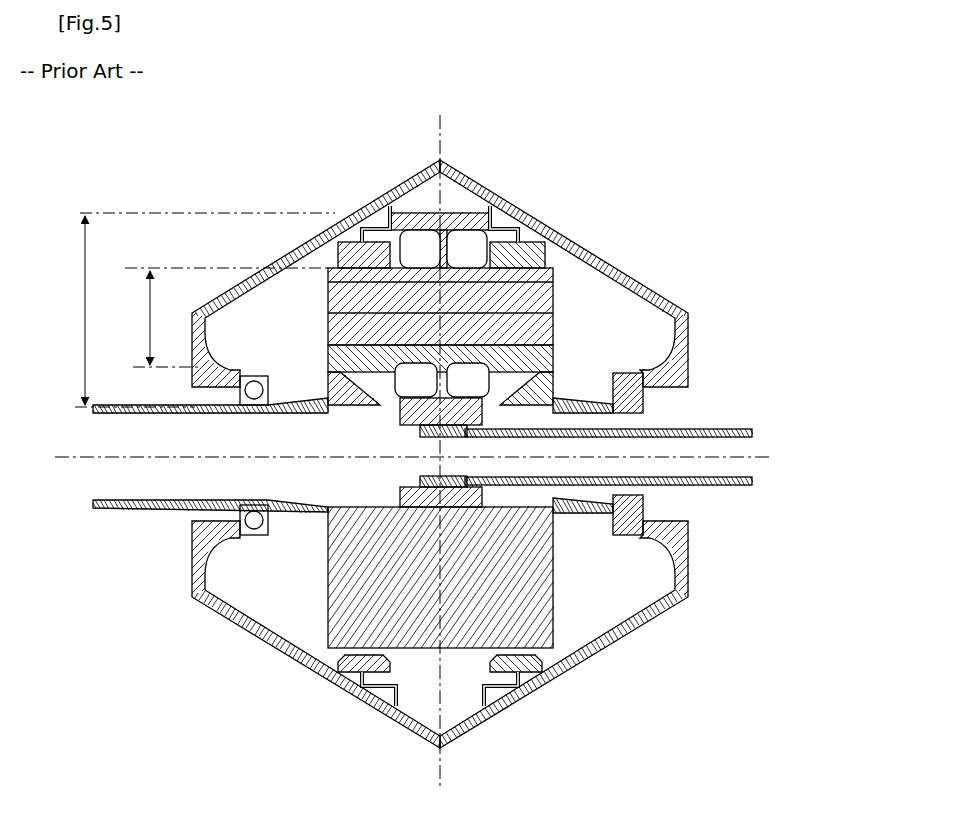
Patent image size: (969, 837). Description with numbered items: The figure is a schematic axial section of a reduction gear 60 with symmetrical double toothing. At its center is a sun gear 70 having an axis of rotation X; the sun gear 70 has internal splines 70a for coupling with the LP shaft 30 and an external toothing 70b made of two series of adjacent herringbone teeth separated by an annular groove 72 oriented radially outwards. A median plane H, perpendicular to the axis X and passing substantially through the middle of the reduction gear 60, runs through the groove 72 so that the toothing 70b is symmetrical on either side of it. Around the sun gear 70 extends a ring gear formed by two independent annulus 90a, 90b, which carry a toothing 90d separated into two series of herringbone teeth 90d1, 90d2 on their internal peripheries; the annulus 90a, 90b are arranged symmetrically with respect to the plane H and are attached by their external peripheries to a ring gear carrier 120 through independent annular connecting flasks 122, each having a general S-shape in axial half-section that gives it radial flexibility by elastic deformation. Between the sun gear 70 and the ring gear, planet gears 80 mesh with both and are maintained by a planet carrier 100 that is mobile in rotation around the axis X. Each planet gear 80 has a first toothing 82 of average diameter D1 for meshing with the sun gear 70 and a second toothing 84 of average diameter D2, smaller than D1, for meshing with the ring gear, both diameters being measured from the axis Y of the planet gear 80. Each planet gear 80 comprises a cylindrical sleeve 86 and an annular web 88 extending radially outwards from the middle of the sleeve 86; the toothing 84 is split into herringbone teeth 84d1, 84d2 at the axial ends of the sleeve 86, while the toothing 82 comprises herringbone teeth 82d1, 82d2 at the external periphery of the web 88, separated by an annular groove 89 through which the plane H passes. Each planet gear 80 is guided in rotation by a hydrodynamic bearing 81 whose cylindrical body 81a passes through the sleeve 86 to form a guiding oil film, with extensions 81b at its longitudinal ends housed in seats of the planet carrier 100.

The reduction gear 60 is at (429, 418).
The ring gear carrier 120 is at (644, 252).
The hydrodynamic bearing 81 is at (416, 391).
The cylindrical body 81a is at (380, 378).
The extensions 81b is at (228, 292).
The LP shaft 30 is at (730, 429).
The planet gears 80 is at (524, 320).
The second toothing 84 is at (524, 320).
The herringbone teeth 84d1 is at (328, 357).
The herringbone teeth 84d2 is at (556, 356).
The cylindrical sleeve 86 is at (328, 302).
The toothing 90d is at (468, 251).
The herringbone teeth 90d1 is at (338, 270).
The herringbone teeth 90d2 is at (545, 272).
The annulus 90a is at (343, 258).
The annulus 90b is at (522, 243).
The first toothing 82 is at (449, 396).
The herringbone teeth 82d1 is at (364, 268).
The herringbone teeth 82d2 is at (480, 208).
The annular connecting flasks 122 is at (386, 222).
The annular groove 89 is at (455, 210).
The annular web 88 is at (435, 376).
The sun gear 70 is at (538, 490).
The internal splines 70a is at (468, 477).
The external toothing 70b is at (480, 550).
The annular groove 72 is at (425, 437).
The planet carrier 100 is at (565, 594).
The median plane H is at (442, 150).
The axis of rotation X is at (97, 459).
The axis of planet gear Y is at (540, 293).
The average diameter of first toothing D1 is at (84, 300).
The average diameter of second toothing D2 is at (149, 322).